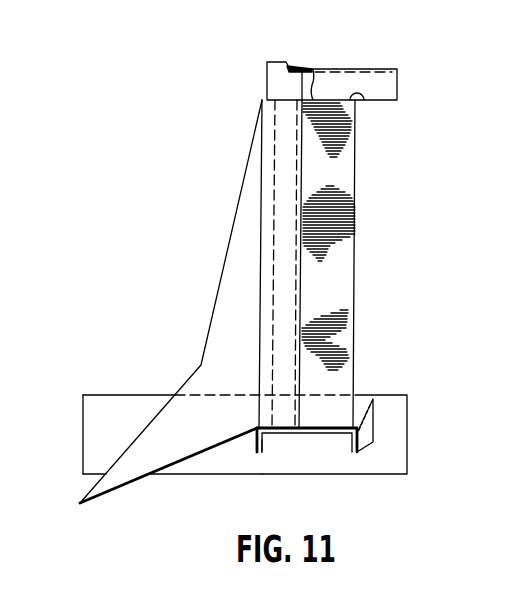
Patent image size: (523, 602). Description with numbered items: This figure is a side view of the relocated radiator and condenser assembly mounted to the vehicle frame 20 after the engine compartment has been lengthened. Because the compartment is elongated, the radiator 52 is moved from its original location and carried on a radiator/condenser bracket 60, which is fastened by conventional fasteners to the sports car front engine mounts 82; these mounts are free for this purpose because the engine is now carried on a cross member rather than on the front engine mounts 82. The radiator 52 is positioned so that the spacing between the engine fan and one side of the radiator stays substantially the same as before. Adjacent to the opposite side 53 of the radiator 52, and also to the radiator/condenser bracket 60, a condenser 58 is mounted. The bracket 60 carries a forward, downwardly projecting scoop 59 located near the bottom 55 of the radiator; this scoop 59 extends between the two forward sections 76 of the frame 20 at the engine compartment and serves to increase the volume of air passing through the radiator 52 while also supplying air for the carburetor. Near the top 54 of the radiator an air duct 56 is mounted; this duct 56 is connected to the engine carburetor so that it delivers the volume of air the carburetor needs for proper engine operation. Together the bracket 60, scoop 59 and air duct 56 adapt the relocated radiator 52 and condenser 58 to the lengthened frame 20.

The frame 20 is at (103, 400).
The radiator 52 is at (343, 227).
The opposite side of the radiator 53 is at (303, 112).
The top of the radiator 54 is at (364, 102).
The bottom of the radiator 55 is at (323, 422).
The air duct 56 is at (383, 70).
The condenser 58 is at (263, 100).
The scoop 59 is at (100, 491).
The radiator/condenser bracket 60 is at (255, 447).
The forward section 76 is at (388, 467).
The front engine mounts 82 is at (368, 421).